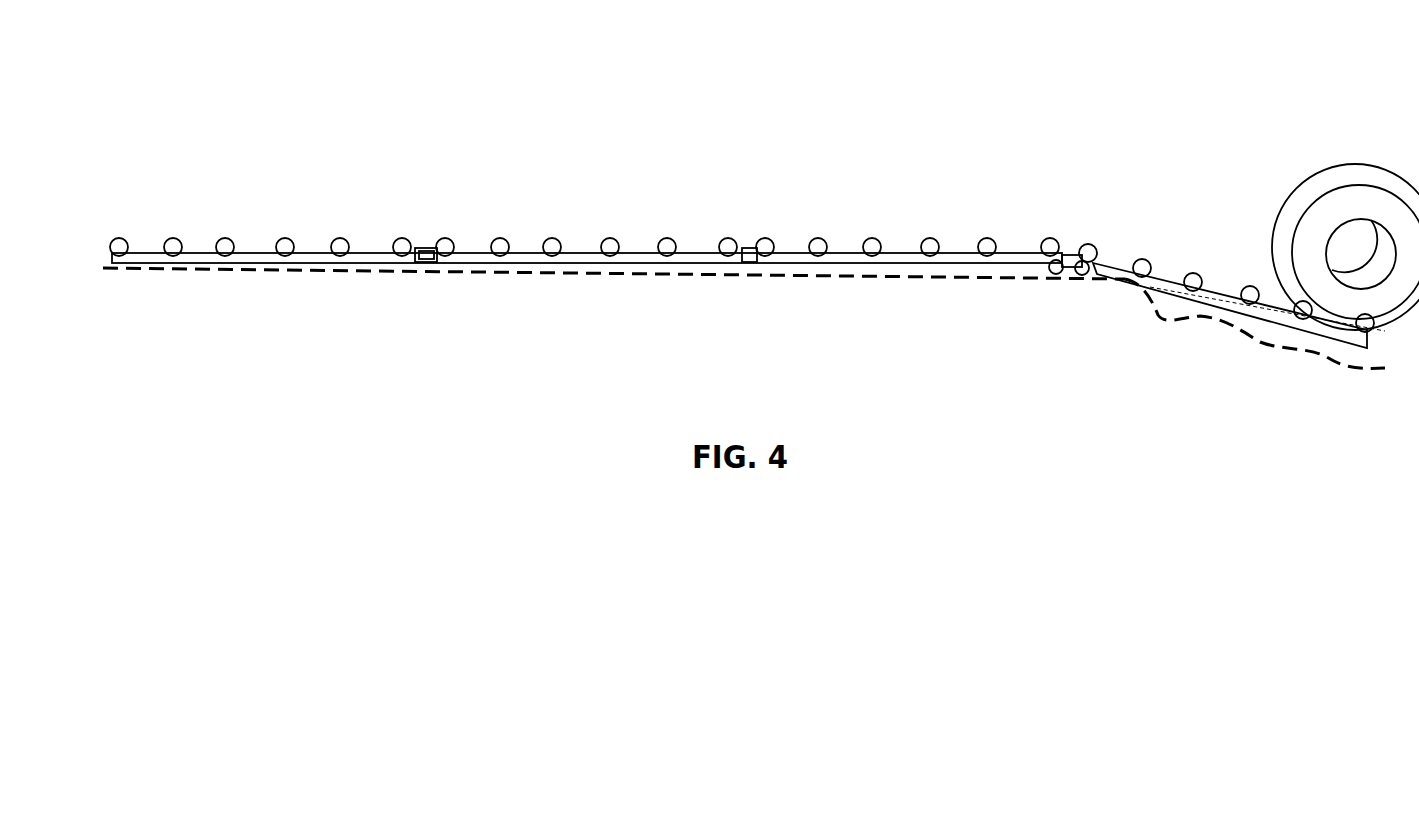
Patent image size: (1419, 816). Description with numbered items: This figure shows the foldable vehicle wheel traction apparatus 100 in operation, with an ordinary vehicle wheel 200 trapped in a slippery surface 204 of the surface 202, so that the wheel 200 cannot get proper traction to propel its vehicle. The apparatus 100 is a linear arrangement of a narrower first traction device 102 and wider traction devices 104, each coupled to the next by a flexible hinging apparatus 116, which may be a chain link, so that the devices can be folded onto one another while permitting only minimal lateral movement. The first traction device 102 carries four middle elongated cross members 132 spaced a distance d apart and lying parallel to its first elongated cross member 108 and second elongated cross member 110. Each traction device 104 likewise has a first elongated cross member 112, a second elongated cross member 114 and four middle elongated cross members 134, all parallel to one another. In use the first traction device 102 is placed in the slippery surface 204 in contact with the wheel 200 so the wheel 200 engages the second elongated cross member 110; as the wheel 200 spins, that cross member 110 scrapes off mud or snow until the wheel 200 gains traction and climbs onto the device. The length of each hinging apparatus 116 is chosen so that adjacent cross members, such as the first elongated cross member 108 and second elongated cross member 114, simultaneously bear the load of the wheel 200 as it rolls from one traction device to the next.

The foldable vehicle wheel traction apparatus 100 is at (750, 269).
The first traction device 102 is at (1239, 240).
The traction device 104 is at (587, 184).
The first elongated cross member 108 is at (1088, 264).
The second elongated cross member 110 is at (1370, 333).
The first elongated cross member 112 is at (125, 254).
The second elongated cross member 114 is at (708, 207).
The hinging apparatus 116 is at (429, 265).
The middle elongated cross member 132 is at (1303, 382).
The middle elongated cross member 134 is at (950, 305).
The vehicle wheel 200 is at (1332, 213).
The surface 202 is at (365, 274).
The slippery surface 204 is at (1247, 341).